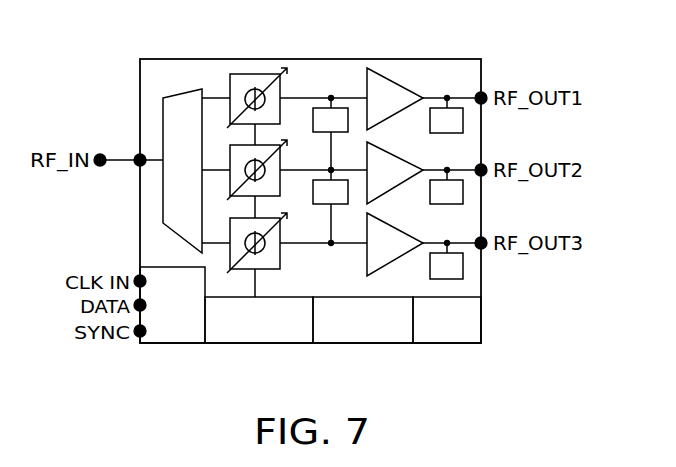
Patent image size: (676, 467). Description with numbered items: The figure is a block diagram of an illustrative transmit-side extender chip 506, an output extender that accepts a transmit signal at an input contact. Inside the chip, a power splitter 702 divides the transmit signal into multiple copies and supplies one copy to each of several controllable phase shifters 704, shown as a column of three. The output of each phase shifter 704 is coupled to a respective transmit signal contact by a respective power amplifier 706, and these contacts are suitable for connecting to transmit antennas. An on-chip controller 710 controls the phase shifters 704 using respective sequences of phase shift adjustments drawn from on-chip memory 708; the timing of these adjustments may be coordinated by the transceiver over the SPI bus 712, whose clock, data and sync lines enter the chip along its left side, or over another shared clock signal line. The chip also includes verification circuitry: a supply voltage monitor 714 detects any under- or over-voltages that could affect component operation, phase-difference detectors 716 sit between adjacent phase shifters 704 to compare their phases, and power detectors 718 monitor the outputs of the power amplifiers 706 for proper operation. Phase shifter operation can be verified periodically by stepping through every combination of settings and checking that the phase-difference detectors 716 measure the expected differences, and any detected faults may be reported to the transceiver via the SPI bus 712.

The transmit-side extender chip 506 is at (155, 58).
The 1:N power splitter 702 is at (177, 97).
The controllable phase shifters 704 is at (290, 55).
The phase-difference detectors 716 is at (310, 55).
The power amplifier 706 is at (422, 55).
The power detectors 718 is at (430, 55).
The SPI bus 712 is at (173, 344).
The on-chip controller 710 is at (272, 344).
The supply voltage monitor 714 is at (368, 344).
The on-chip memory 708 is at (465, 344).